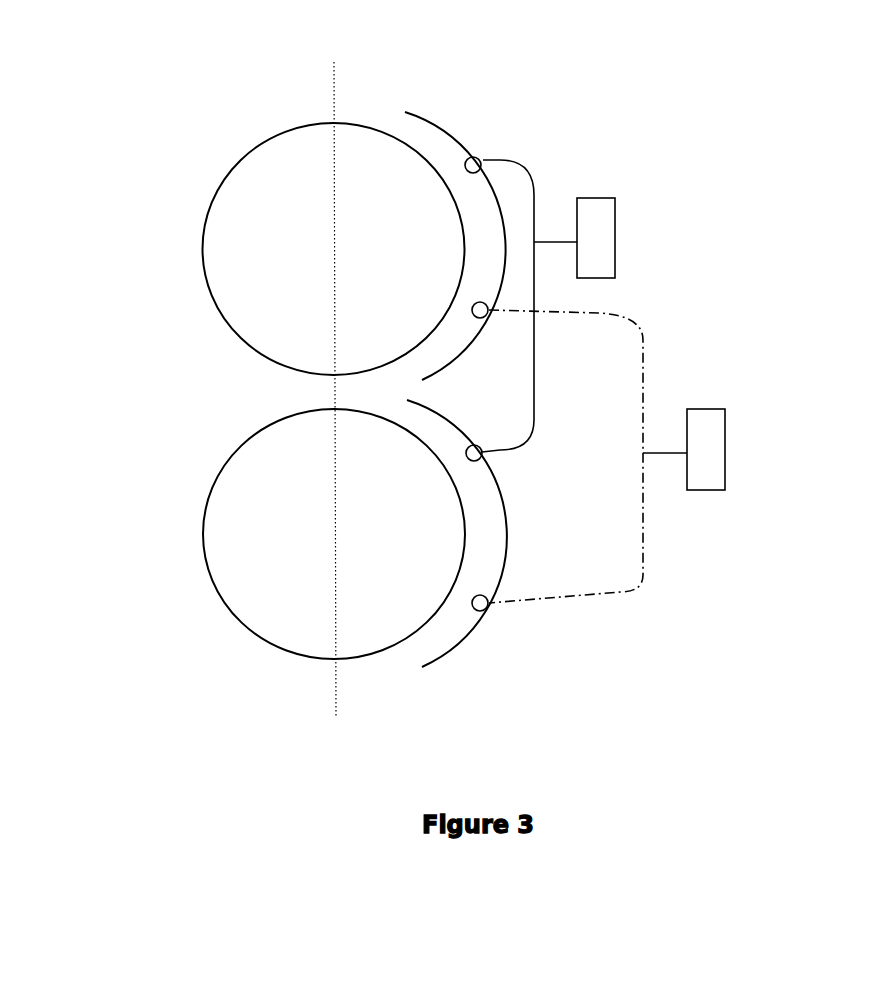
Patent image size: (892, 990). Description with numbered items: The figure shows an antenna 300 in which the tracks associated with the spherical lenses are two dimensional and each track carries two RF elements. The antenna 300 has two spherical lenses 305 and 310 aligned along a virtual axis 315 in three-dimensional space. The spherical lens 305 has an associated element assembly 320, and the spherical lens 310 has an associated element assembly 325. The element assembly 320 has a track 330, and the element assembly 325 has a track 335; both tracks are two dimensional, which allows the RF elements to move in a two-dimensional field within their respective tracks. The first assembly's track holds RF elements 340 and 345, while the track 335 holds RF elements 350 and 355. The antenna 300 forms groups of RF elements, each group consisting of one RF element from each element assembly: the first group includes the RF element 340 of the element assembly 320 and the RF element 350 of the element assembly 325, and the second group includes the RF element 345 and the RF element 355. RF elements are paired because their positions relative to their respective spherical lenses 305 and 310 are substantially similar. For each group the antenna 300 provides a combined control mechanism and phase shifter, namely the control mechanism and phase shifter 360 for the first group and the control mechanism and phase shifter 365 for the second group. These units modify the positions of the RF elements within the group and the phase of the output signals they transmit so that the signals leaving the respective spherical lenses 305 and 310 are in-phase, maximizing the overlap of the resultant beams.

The antenna 300 is at (147, 62).
The spherical lens 305 is at (222, 182).
The spherical lens 310 is at (213, 487).
The virtual axis 315 is at (334, 75).
The element assembly 320 is at (468, 107).
The element assembly 325 is at (493, 670).
The track 330 is at (476, 150).
The track 335 is at (455, 414).
The RF element 340 is at (466, 160).
The RF element 345 is at (475, 318).
The RF element 350 is at (467, 450).
The RF element 355 is at (474, 610).
The control mechanism and phase shifter 360 is at (615, 210).
The control mechanism and phase shifter 365 is at (725, 428).